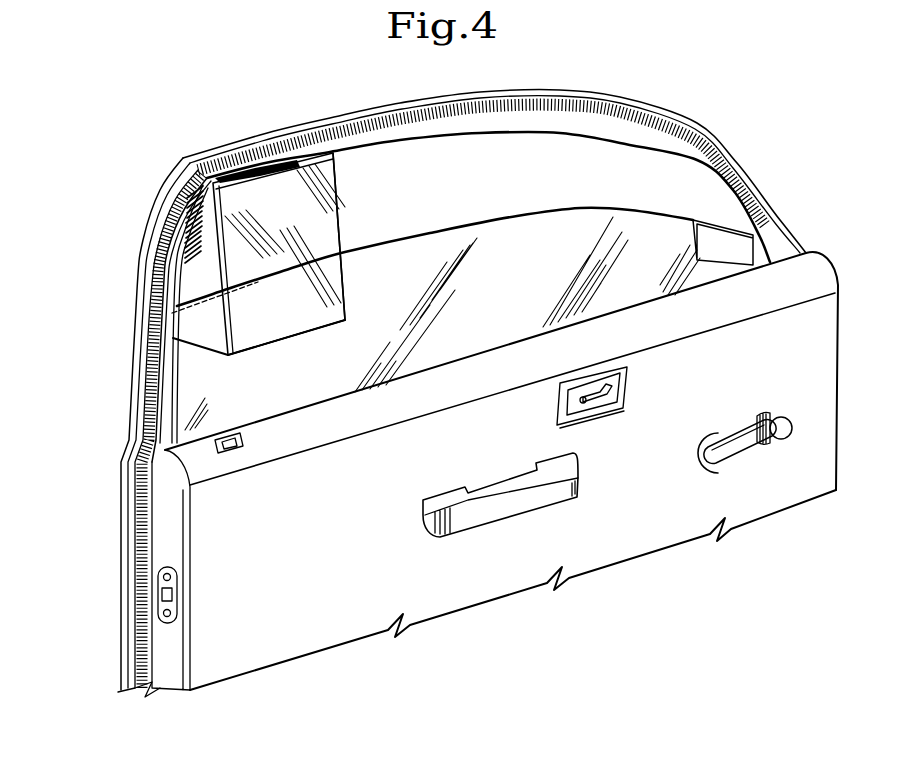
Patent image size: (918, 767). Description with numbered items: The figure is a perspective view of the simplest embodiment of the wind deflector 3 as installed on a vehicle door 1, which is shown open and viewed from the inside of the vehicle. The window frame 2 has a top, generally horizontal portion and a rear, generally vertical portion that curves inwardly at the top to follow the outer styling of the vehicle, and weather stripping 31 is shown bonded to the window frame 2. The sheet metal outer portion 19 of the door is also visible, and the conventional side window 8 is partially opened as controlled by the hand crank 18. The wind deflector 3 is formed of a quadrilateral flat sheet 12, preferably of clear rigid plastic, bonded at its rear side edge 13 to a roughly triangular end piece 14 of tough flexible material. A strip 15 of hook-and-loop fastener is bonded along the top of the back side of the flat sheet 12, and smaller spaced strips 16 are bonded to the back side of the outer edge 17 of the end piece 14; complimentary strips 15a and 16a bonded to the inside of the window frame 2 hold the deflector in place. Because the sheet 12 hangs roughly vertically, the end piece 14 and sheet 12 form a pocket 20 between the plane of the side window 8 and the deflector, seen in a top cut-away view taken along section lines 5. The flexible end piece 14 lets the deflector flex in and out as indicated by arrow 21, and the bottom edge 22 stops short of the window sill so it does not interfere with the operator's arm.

The door 1 is at (165, 529).
The window frame 2 is at (180, 170).
The wind deflector 3 is at (303, 212).
The section lines 5 is at (110, 262).
The side window 8 is at (517, 210).
The flat sheet 12 is at (340, 187).
The rear side edge 13 is at (222, 208).
The end piece 14 is at (212, 340).
The strip 15 is at (481, 156).
The complimentary strip 15a is at (280, 160).
The strips 16 is at (153, 253).
The complimentary strips 16a is at (160, 303).
The outer edge 17 is at (165, 337).
The hand crank 18 is at (735, 430).
The sheet metal outer portion 19 is at (403, 100).
The pocket 20 is at (247, 320).
The arrow 21 is at (278, 325).
The bottom edge 22 is at (270, 347).
The weather stripping 31 is at (165, 215).